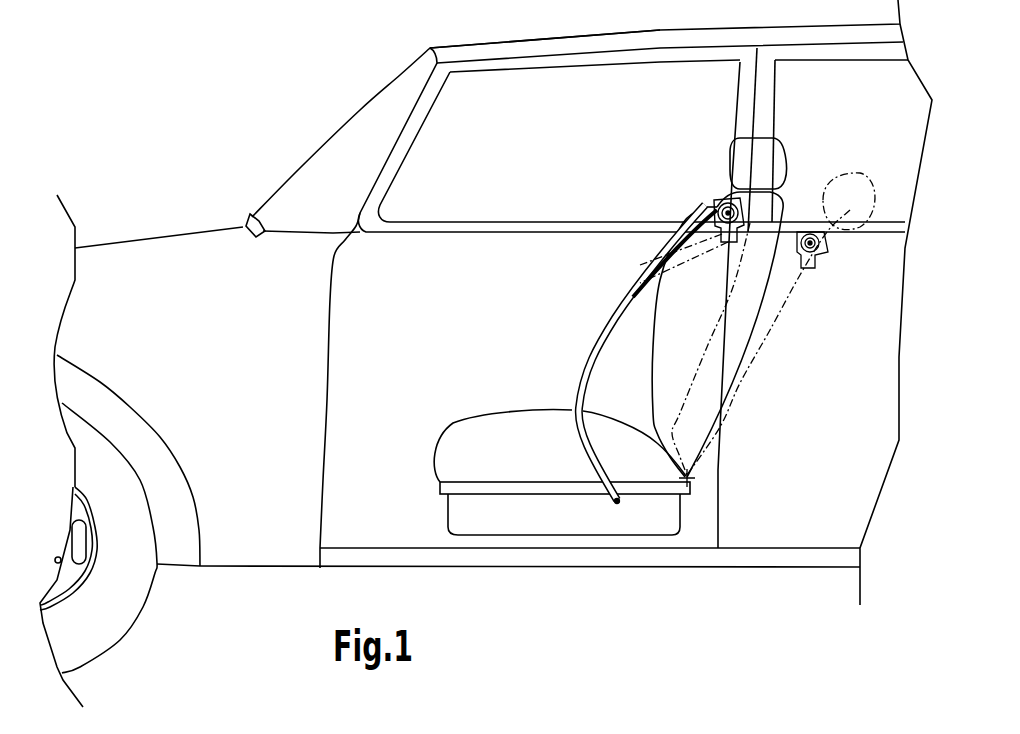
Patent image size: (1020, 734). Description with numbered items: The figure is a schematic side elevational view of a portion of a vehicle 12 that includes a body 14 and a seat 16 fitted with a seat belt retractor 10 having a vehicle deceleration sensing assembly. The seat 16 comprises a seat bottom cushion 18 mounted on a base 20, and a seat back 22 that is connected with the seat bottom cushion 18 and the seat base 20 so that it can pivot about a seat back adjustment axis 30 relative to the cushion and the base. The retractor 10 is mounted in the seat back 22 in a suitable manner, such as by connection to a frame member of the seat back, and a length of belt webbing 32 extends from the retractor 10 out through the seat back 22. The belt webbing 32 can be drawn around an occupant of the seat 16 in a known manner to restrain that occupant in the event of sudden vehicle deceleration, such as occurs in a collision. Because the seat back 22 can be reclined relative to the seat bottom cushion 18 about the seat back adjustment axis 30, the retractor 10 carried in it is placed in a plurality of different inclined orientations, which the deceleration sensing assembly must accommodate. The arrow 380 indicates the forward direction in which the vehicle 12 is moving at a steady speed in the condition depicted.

The seat belt retractor 10 is at (700, 212).
The vehicle 12 is at (192, 112).
The body 14 is at (430, 38).
The seat 16 is at (571, 336).
The seat bottom cushion 18 is at (434, 475).
The seat base 20 is at (448, 520).
The seat back 22 is at (750, 290).
The seat back adjustment axis 30 is at (692, 482).
The belt webbing 32 is at (593, 345).
The arrow indicating forward direction 380 is at (225, 187).